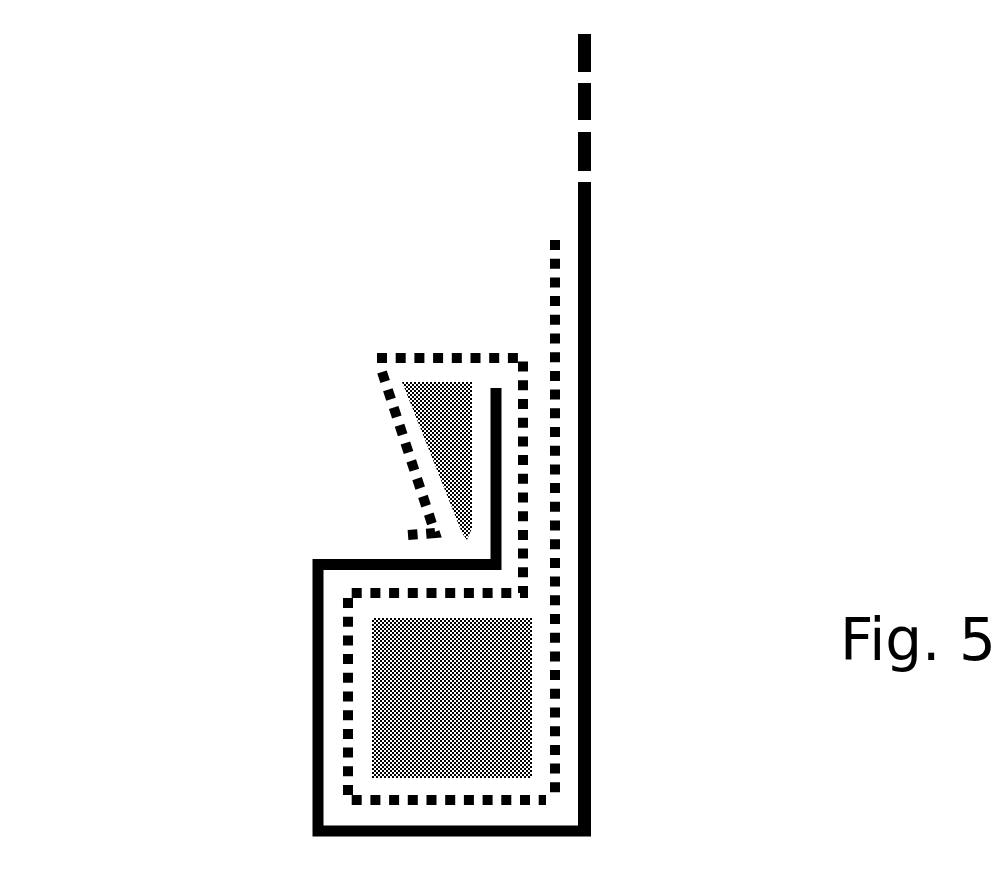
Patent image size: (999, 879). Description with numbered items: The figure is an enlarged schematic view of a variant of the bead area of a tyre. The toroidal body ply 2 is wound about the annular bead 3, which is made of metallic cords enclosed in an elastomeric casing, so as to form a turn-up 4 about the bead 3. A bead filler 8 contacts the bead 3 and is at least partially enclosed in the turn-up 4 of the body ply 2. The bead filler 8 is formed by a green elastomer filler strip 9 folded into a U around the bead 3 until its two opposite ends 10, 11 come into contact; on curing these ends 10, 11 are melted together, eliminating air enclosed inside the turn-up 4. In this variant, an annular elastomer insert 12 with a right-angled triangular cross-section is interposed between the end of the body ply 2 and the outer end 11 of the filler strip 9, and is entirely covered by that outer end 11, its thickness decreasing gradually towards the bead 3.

The body ply 2 is at (592, 240).
The bead 3 is at (452, 698).
The turn-up 4 is at (232, 706).
The bead filler 8 is at (356, 256).
The filler strip 9 is at (553, 318).
The end of the filler strip 10 is at (514, 259).
The outer end of the filler strip 11 is at (346, 464).
The annular insert 12 is at (430, 408).